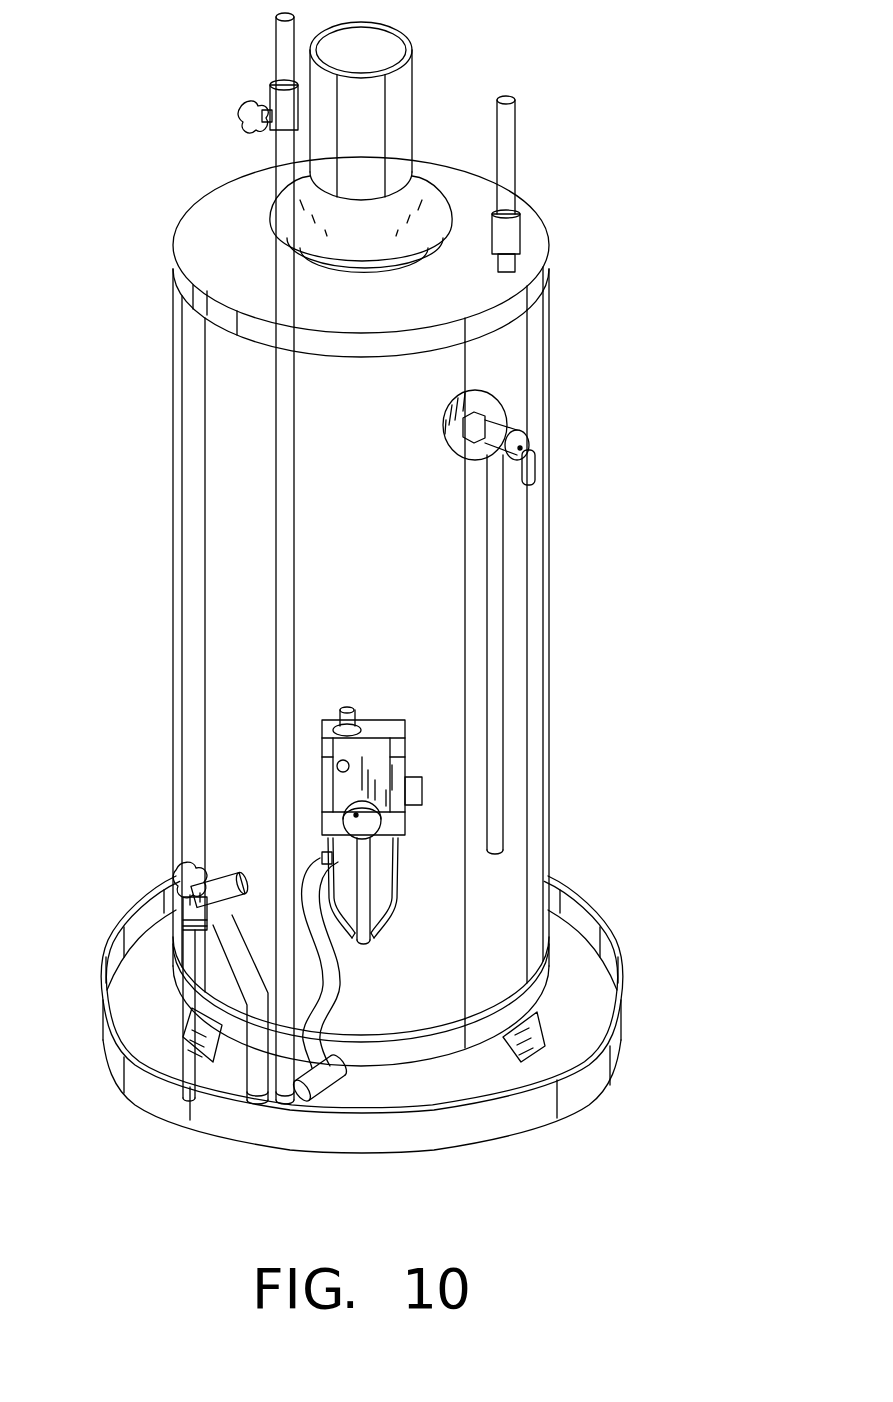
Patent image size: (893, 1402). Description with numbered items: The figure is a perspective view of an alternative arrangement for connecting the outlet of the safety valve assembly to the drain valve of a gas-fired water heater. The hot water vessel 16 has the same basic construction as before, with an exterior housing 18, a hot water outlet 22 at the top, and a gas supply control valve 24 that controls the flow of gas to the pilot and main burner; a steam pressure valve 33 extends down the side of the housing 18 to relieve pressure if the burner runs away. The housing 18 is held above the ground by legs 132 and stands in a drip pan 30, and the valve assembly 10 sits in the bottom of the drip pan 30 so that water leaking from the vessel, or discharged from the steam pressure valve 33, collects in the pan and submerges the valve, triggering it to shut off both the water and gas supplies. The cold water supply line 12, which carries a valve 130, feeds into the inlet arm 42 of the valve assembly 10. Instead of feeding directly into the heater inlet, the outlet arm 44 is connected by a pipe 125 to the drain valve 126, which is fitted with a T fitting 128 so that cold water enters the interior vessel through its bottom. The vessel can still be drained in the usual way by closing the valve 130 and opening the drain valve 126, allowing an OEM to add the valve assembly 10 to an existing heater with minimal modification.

The valve assembly 10 is at (345, 1110).
The cold water supply line 12 is at (287, 630).
The hot water vessel 16 is at (180, 549).
The exterior housing 18 is at (205, 420).
The hot water outlet 22 is at (510, 158).
The gas supply control valve 24 is at (412, 760).
The drip pan 30 is at (572, 1085).
The steam pressure valve 33 is at (497, 565).
The inlet arm 42 is at (294, 1100).
The outlet arm 44 is at (262, 1105).
The pipe 125 is at (252, 1045).
The drain valve 126 is at (160, 870).
The T fitting 128 is at (220, 862).
The valve 130 is at (268, 100).
The legs 132 is at (188, 1015).